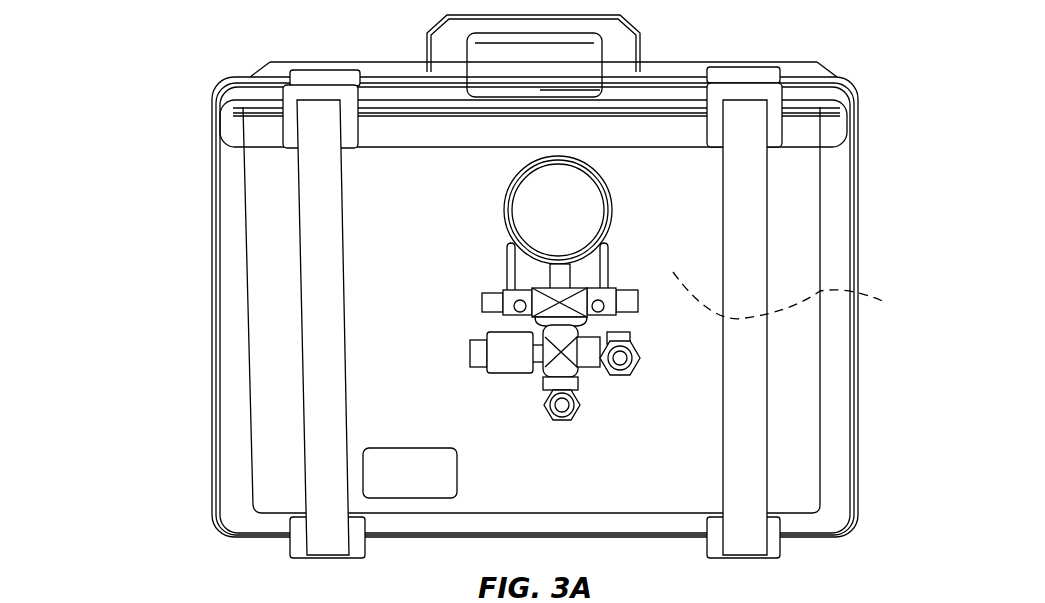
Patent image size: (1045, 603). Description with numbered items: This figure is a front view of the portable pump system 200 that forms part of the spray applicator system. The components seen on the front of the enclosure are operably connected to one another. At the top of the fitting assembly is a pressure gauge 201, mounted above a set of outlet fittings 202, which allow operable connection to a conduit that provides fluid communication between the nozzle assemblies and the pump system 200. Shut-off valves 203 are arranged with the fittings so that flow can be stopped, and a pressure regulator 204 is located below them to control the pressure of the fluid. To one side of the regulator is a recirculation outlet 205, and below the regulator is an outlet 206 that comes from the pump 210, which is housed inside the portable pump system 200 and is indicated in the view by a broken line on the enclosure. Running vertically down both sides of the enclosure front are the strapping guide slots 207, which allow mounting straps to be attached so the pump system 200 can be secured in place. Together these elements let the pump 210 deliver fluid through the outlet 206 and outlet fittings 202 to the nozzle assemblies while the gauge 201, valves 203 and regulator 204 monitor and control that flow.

The portable pump system 200 is at (190, 183).
The pressure gauge 201 is at (538, 218).
The outlet fittings 202 is at (485, 296).
The shut-off valves 203 is at (520, 312).
The pressure regulator 204 is at (527, 357).
The recirculation outlet 205 is at (607, 368).
The outlet 206 is at (548, 407).
The strapping guide slots 207 is at (747, 537).
The pump 210 is at (801, 298).